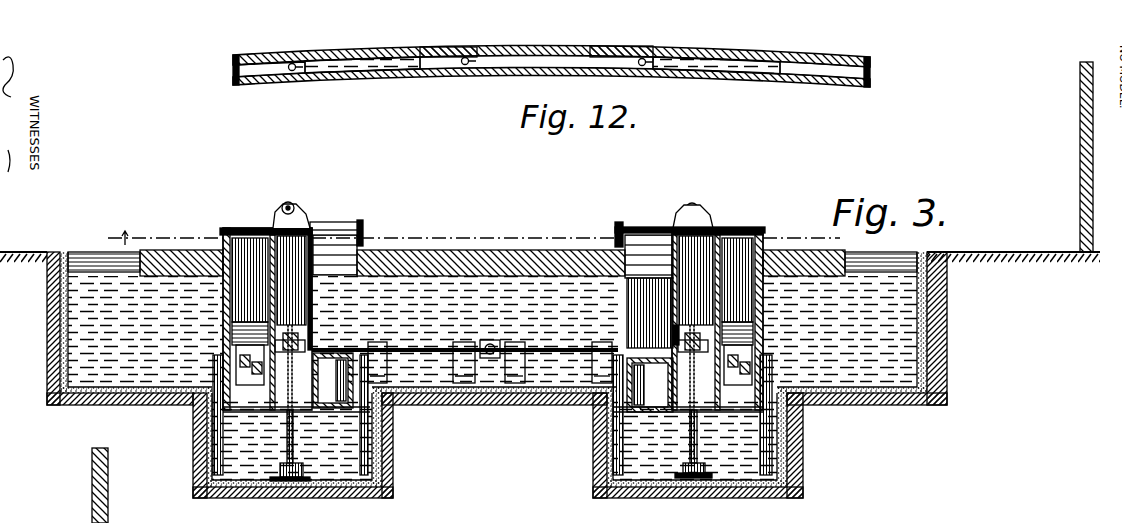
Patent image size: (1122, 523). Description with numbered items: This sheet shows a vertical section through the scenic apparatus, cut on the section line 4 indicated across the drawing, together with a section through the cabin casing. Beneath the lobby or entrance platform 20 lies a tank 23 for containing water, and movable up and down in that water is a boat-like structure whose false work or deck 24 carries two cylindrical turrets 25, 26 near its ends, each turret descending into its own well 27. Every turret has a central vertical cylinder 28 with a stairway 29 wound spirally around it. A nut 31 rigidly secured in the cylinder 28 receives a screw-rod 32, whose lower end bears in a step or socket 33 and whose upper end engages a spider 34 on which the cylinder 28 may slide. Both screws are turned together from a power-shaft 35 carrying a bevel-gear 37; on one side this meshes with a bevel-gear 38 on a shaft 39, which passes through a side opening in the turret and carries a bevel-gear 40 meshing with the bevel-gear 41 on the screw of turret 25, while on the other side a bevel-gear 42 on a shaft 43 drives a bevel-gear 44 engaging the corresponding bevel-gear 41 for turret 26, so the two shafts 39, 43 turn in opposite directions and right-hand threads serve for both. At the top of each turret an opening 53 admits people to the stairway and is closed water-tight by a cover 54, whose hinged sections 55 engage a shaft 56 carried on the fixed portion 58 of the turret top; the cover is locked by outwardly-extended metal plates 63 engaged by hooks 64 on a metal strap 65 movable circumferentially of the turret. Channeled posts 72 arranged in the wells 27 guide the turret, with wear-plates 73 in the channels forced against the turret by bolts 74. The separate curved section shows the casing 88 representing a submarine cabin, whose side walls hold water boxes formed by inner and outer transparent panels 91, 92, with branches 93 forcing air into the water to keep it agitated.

In FIG. 3, the section line 4 is at (470, 239).
In FIG. 3, the lobby or entrance platform 20 is at (1030, 250).
In FIG. 3, the tank 23 is at (925, 245).
In FIG. 3, the false work or deck 24 is at (545, 250).
In FIG. 3, the turret 25 is at (766, 240).
In FIG. 3, the turret 26 is at (226, 232).
In FIG. 3, the well 27 is at (748, 453).
In FIG. 3, the vertical cylinder 28 is at (305, 275).
In FIG. 3, the stairway 29 is at (725, 315).
In FIG. 3, the nut 31 is at (493, 382).
In FIG. 3, the screw-rod 32 is at (687, 457).
In FIG. 3, the step or socket 33 is at (710, 473).
In FIG. 3, the spider 34 is at (675, 330).
In FIG. 3, the power-shaft 35 is at (492, 340).
In FIG. 3, the bevel-gear 37 is at (476, 335).
In FIG. 3, the bevel-gear 38 is at (502, 342).
In FIG. 3, the shaft 39 is at (565, 346).
In FIG. 3, the bevel-gear 40 is at (672, 340).
In FIG. 3, the bevel-gear 41 is at (685, 330).
In FIG. 3, the bevel-gear 42 is at (476, 400).
In FIG. 3, the shaft 43 is at (418, 345).
In FIG. 3, the bevel-gear 44 is at (305, 345).
In FIG. 3, the opening 53 is at (670, 222).
In FIG. 3, the cover 54 is at (633, 225).
In FIG. 3, the hinged sections 55 is at (302, 218).
In FIG. 3, the shaft 56 is at (703, 208).
In FIG. 3, the fixed portion of the turret 58 is at (735, 228).
In FIG. 3, the metal plates 63 is at (358, 222).
In FIG. 3, the hooks 64 is at (364, 228).
In FIG. 3, the metal strap 65 is at (358, 240).
In FIG. 3, the channeled posts 72 is at (806, 397).
In FIG. 3, the wear-plates 73 is at (605, 440).
In FIG. 3, the bolts 74 is at (605, 472).
In FIG. 12, the casing 88 is at (622, 50).
In FIG. 12, the panels or plates 91 is at (726, 78).
In FIG. 12, the panels or plates 92 is at (722, 55).
In FIG. 12, the branches 93 is at (470, 80).